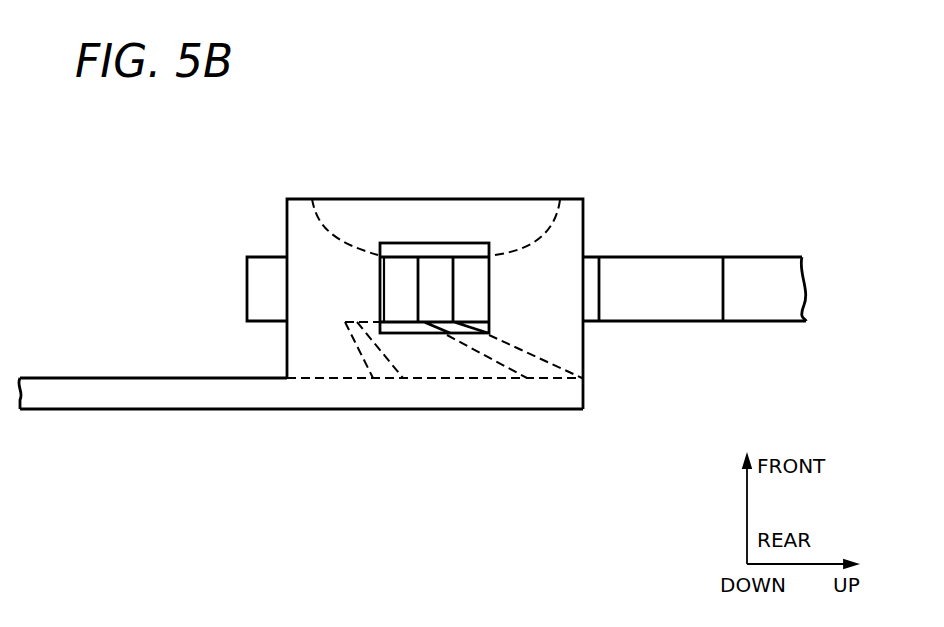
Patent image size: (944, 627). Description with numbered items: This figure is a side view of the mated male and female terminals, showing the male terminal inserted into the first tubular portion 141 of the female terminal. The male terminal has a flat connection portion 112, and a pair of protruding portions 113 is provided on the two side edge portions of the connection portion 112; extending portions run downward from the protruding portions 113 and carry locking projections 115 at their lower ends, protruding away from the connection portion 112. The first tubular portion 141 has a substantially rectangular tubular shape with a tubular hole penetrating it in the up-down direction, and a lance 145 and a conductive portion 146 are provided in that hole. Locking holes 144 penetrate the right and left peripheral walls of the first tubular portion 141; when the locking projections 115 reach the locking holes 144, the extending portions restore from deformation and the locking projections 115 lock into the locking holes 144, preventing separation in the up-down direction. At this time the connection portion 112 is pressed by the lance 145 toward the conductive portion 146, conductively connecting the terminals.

The connection portion 112 is at (265, 272).
The protruding portions 113 is at (663, 288).
The locking projections 115 is at (467, 275).
The first tubular portion 141 is at (572, 210).
The locking holes 144 is at (383, 292).
The lance 145 is at (480, 353).
The conductive portion 146 is at (338, 228).